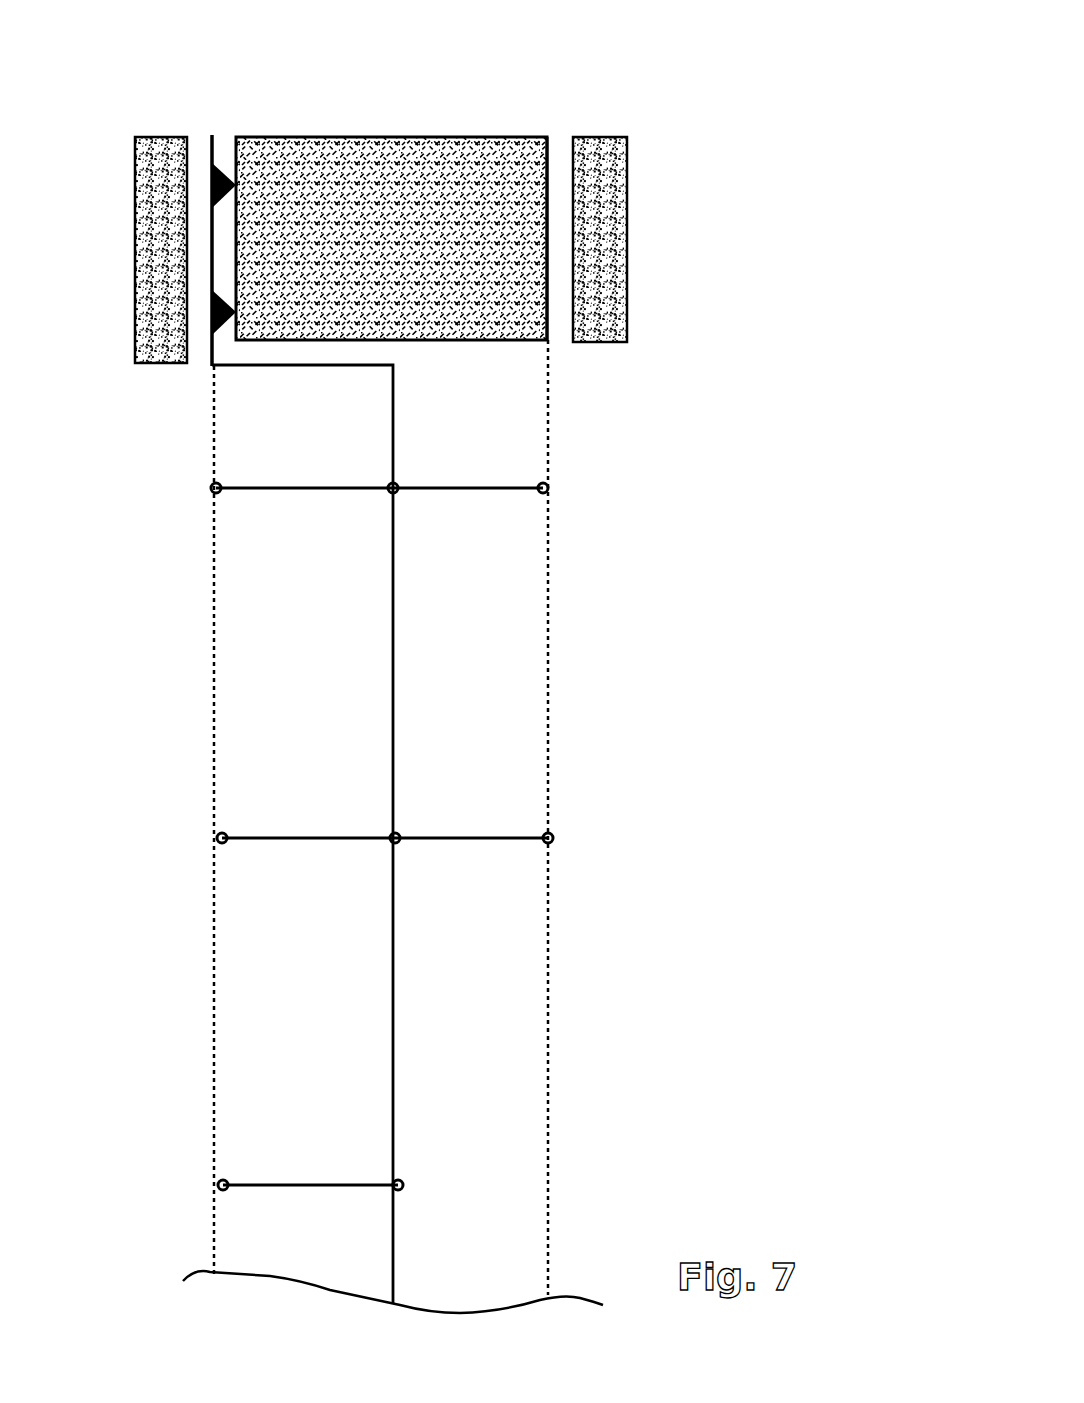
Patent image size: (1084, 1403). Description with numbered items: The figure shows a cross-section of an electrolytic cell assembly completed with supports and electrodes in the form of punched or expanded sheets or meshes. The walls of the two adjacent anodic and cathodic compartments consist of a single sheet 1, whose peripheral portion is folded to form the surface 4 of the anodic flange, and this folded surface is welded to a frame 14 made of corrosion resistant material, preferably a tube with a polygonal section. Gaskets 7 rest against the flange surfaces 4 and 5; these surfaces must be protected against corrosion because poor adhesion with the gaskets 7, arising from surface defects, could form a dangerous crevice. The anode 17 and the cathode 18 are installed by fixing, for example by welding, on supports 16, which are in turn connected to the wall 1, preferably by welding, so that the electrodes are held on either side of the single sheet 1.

The single sheet 1 is at (380, 627).
The anodic flange surface 4 is at (202, 350).
The flange 5 is at (563, 143).
The gaskets 7 is at (153, 277).
The frame 14 is at (422, 168).
The supports 16 is at (477, 493).
The anode 17 is at (202, 920).
The cathode 18 is at (565, 897).